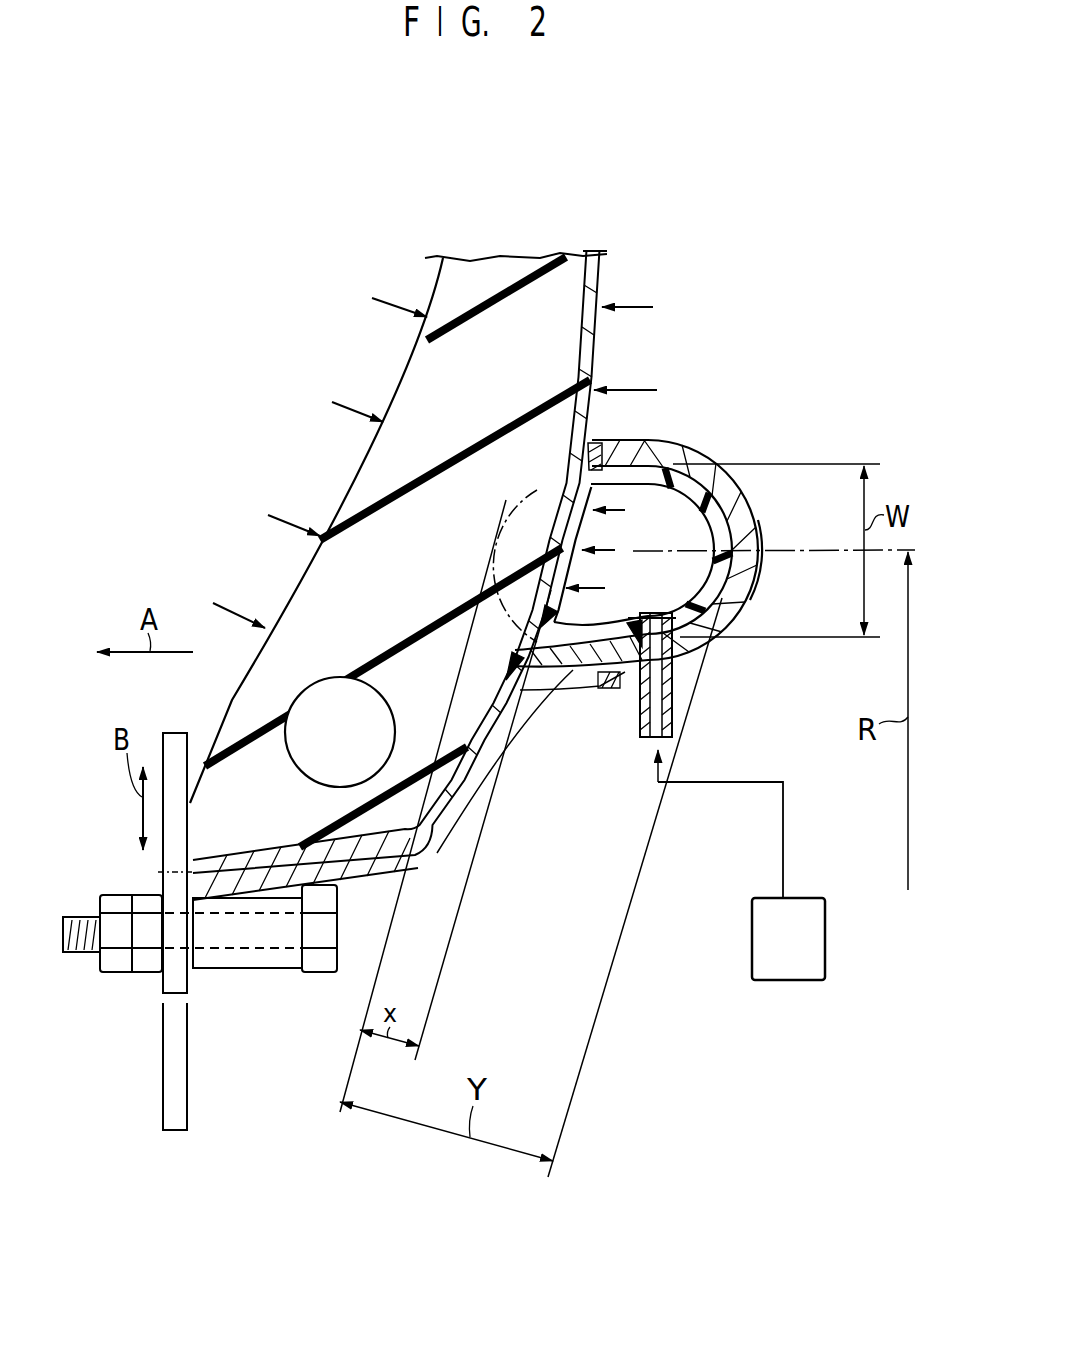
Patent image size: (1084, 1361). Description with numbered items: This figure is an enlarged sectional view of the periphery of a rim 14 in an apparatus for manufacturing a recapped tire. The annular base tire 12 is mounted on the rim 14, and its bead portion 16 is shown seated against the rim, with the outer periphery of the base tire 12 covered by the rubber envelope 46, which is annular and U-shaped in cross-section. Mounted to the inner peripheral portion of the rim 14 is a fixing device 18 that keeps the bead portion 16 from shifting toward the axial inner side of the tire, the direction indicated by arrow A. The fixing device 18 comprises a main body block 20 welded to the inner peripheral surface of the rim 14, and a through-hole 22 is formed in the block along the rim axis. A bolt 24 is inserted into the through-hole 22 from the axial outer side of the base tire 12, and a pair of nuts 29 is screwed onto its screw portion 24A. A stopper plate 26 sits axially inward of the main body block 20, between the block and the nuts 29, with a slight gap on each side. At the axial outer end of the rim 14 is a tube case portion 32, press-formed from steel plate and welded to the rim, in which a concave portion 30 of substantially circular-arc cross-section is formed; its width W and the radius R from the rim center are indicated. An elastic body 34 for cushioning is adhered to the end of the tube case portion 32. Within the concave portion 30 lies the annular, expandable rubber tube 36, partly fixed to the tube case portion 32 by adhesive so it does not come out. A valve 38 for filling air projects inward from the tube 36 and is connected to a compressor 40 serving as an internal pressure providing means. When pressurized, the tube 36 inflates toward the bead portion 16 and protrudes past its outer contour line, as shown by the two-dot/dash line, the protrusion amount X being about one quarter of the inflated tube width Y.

The base tire 12 is at (490, 254).
The rim 14 is at (440, 857).
The bead portion 16 is at (280, 607).
The fixing device 18 is at (145, 996).
The main body block 20 is at (237, 968).
The through-hole 22 is at (262, 948).
The bolt 24 is at (330, 930).
The screw portion 24A is at (95, 918).
The stopper plate 26 is at (172, 733).
The nuts 29 is at (133, 973).
The concave portion 30 is at (710, 464).
The tube case portion 32 is at (770, 498).
The elastic body 34 is at (592, 438).
The tube 36 is at (670, 447).
The valve 38 is at (640, 707).
The compressor 40 is at (751, 967).
The envelope 46 is at (600, 270).